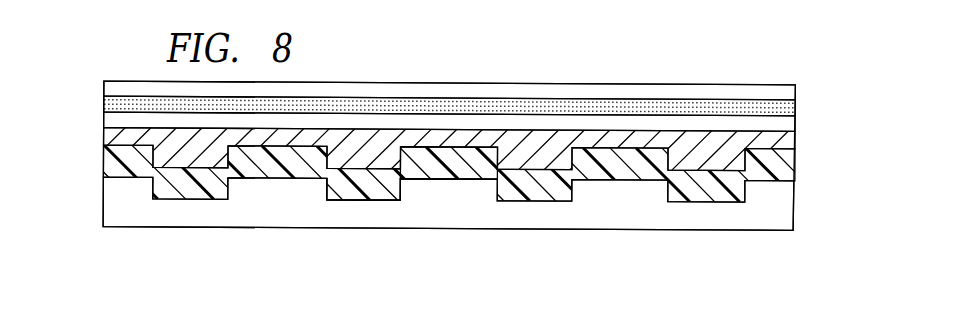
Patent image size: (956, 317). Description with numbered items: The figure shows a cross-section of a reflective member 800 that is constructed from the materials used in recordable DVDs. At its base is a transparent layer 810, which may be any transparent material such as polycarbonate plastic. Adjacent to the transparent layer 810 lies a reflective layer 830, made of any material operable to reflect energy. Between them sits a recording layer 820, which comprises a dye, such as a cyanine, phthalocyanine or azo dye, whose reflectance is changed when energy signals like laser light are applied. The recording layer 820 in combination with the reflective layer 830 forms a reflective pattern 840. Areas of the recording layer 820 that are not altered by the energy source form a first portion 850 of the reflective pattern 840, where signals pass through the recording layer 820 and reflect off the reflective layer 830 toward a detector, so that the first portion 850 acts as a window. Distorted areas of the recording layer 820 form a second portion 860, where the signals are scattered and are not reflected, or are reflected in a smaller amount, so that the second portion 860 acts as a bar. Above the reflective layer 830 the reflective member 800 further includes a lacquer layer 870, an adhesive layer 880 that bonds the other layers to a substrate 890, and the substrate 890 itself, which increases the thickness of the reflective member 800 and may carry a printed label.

The reflective member 800 is at (600, 60).
The transparent layer 810 is at (707, 224).
The recording layer 820 is at (104, 162).
The reflective layer 830 is at (104, 135).
The reflective pattern 840 is at (390, 213).
The first portion 850 is at (350, 210).
The second portion 860 is at (444, 188).
The lacquer layer 870 is at (795, 126).
The adhesive layer 880 is at (104, 100).
The substrate 890 is at (795, 93).